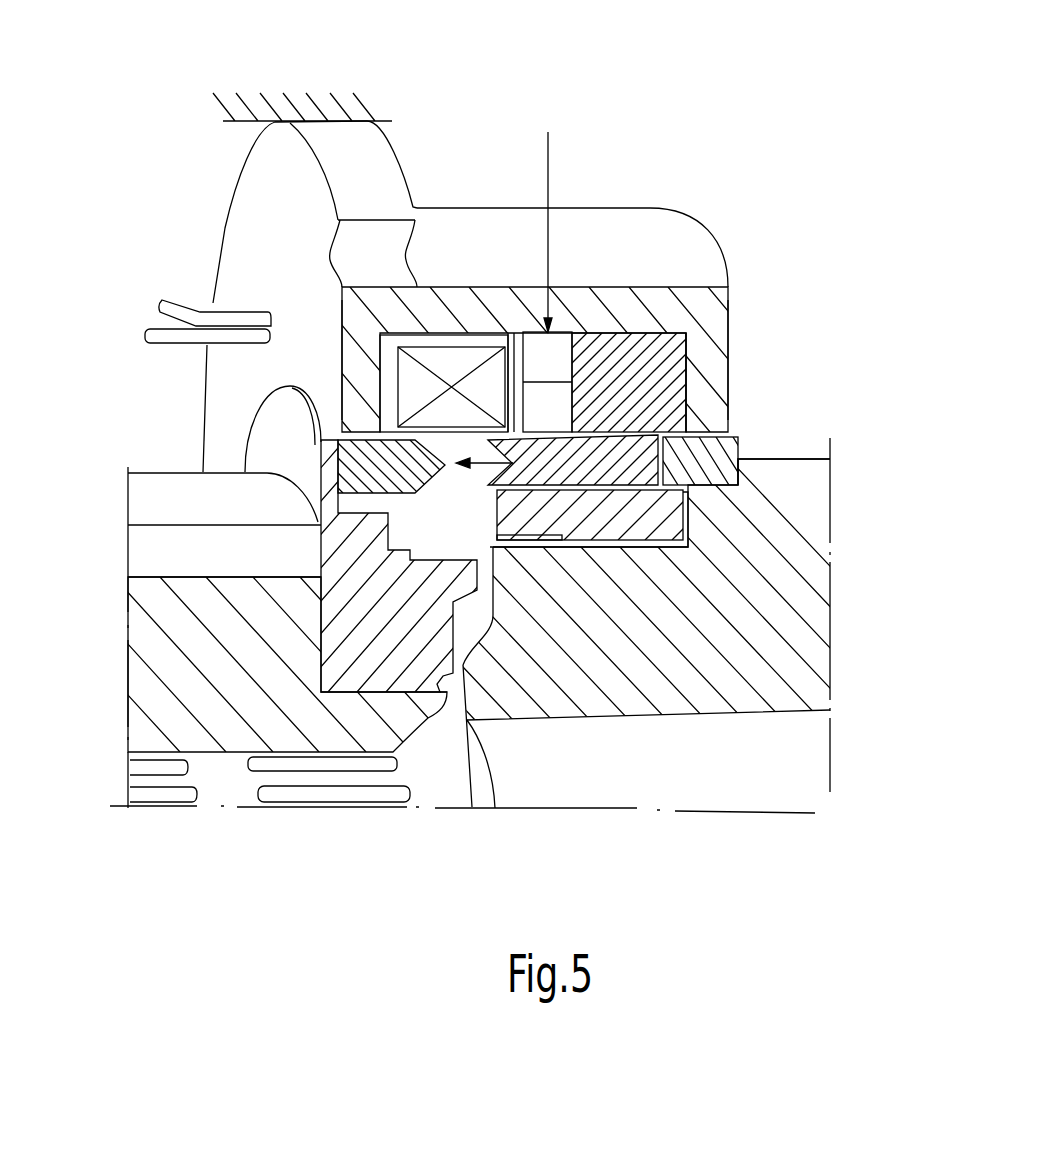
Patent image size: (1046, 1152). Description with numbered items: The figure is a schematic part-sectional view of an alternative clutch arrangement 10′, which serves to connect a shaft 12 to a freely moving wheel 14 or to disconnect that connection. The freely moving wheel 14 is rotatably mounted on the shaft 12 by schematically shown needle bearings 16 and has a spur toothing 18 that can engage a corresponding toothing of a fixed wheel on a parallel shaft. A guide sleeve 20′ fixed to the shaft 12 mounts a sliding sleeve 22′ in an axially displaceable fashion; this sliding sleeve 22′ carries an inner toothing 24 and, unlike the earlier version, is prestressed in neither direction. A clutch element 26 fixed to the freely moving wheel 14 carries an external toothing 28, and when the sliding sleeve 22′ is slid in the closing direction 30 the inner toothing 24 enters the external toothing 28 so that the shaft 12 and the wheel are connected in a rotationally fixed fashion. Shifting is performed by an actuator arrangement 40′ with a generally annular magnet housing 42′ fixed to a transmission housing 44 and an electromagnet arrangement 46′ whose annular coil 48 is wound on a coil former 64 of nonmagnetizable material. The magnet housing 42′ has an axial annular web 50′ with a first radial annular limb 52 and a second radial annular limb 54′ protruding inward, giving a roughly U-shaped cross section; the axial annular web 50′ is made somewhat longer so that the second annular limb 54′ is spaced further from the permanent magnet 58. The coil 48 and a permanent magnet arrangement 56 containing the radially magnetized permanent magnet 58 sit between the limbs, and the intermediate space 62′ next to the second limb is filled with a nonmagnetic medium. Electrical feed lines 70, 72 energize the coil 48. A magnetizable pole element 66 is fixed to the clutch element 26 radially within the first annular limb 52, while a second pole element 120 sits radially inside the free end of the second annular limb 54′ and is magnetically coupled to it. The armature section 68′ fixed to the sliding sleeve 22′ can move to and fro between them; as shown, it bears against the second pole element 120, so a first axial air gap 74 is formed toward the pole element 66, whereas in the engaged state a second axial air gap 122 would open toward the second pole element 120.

The clutch arrangement 10′ is at (708, 140).
The shaft 12 is at (437, 780).
The freely moving wheel 14 is at (150, 647).
The needle bearings 16 is at (128, 768).
The spur toothing 18 is at (147, 553).
The guide sleeve 20′ is at (507, 682).
The sliding sleeve 22′ is at (670, 517).
The inner toothing 24 is at (543, 533).
The clutch element 26 is at (333, 638).
The external toothing 28 is at (340, 532).
The closing direction 30 is at (487, 460).
The actuator arrangement 40′ is at (675, 178).
The magnet housing 42′ is at (720, 320).
The transmission housing 44 is at (308, 107).
The electromagnet arrangement 46′ is at (340, 290).
The coil 48 is at (427, 387).
The axial annular web 50′ is at (577, 297).
The first radial annular limb 52 is at (370, 411).
The second radial annular limb 54′ is at (717, 372).
The permanent magnet arrangement 56 is at (548, 215).
The permanent magnet 58 is at (560, 348).
The intermediate space 62′ is at (672, 403).
The coil former 64 is at (445, 340).
The pole element 66 is at (336, 476).
The armature section 68′ is at (720, 453).
The electrical feed line 70 is at (158, 335).
The electrical feed line 72 is at (172, 298).
The first axial air gap 74 is at (447, 485).
The second pole element 120 is at (665, 447).
The second axial air gap 122 is at (740, 461).